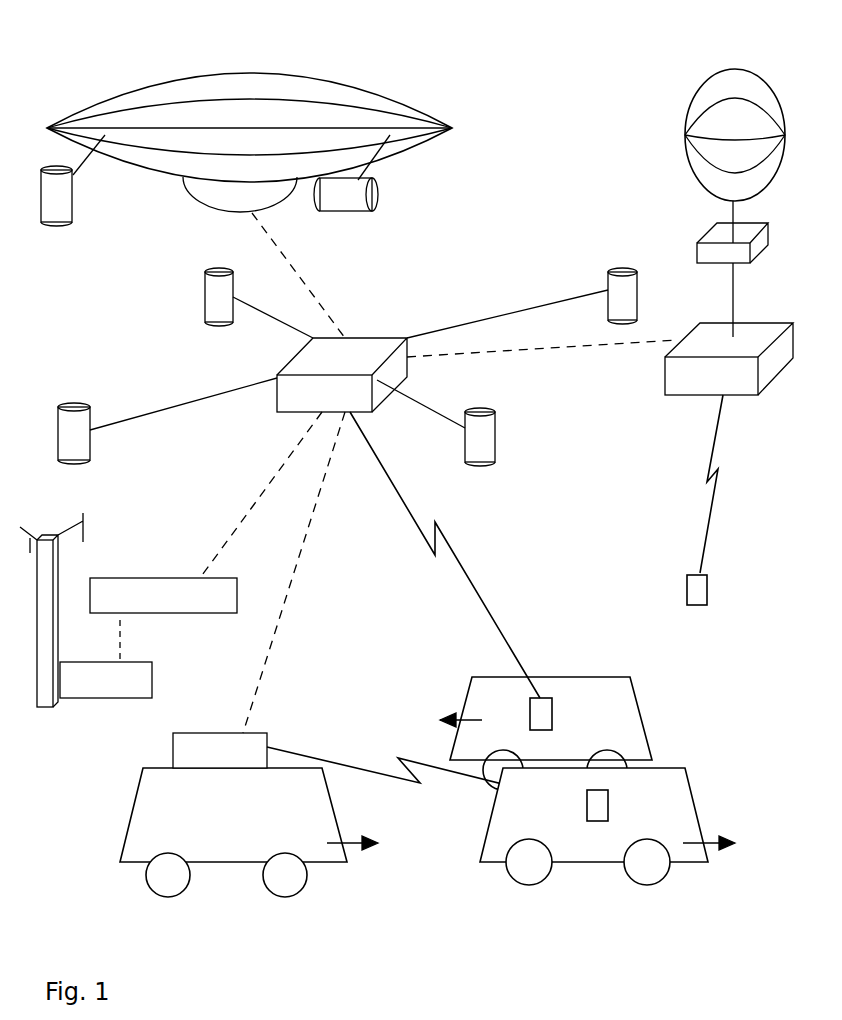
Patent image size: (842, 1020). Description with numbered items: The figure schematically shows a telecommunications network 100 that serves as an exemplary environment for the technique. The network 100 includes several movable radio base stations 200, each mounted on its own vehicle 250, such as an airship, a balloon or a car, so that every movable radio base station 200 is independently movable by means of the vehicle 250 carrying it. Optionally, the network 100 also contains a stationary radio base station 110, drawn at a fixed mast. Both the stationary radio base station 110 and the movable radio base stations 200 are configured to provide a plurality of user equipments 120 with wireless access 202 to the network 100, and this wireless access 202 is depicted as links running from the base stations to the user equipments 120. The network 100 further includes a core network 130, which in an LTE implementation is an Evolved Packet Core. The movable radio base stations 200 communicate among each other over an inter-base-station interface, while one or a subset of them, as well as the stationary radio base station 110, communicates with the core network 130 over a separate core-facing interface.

The telecommunications network 100 is at (178, 34).
The stationary radio base station 110 is at (154, 680).
The user equipment 120 is at (708, 592).
The core network 130 is at (155, 578).
The movable radio base station 200 is at (198, 185).
The wireless access 202 is at (467, 573).
The vehicle 250 is at (353, 90).